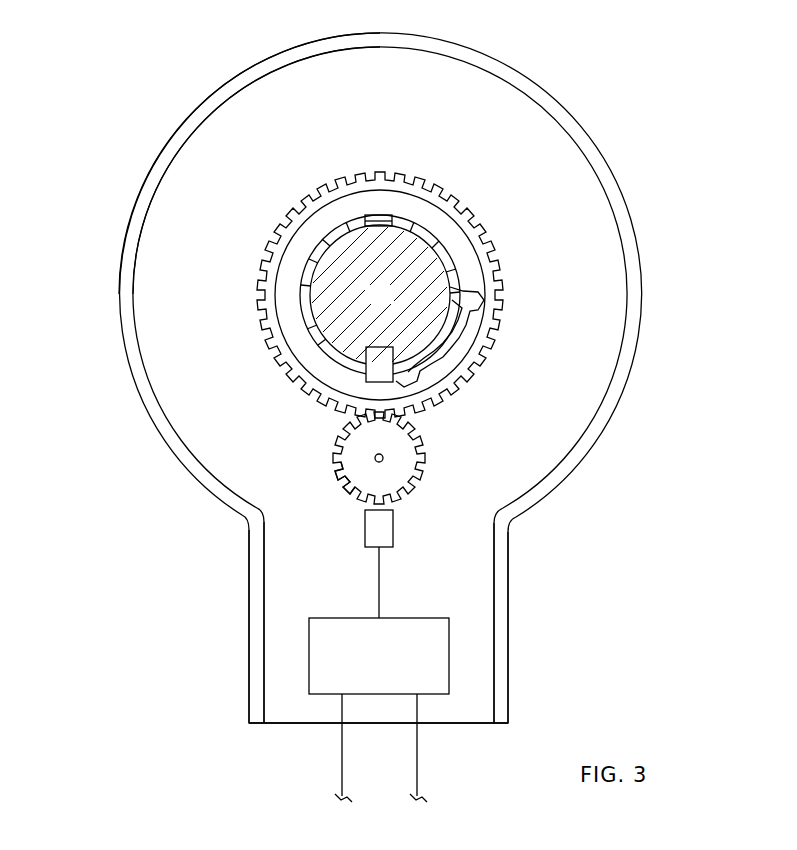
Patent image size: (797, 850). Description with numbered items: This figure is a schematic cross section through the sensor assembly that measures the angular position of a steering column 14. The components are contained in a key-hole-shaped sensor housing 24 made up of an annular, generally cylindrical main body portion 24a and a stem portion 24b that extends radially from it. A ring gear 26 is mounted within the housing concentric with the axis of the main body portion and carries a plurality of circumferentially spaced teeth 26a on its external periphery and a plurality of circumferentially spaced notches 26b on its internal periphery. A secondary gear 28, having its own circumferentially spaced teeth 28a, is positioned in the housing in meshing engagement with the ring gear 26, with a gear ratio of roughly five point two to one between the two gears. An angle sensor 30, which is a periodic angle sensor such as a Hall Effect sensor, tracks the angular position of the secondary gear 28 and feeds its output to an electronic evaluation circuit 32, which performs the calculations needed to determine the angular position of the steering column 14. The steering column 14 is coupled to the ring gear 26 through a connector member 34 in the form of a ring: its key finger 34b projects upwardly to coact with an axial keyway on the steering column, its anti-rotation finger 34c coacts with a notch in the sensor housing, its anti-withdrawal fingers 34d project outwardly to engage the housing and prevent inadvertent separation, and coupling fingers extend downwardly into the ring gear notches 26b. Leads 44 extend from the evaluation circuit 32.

The steering column 14 is at (393, 309).
The sensor housing 24 is at (626, 199).
The main body portion 24a is at (140, 187).
The stem portion 24b is at (249, 628).
The ring gear 26 is at (455, 200).
The teeth 26a is at (487, 352).
The notches 26b is at (480, 328).
The secondary gear 28 is at (347, 447).
The teeth 28a is at (347, 492).
The angle sensor 30 is at (393, 528).
The electronic evaluation circuit 32 is at (393, 661).
The connector member 34 is at (297, 338).
The key finger 34b is at (370, 358).
The anti-rotation finger 34c is at (373, 215).
The anti-withdrawal fingers 34d is at (309, 316).
The electrical leads 44 is at (342, 752).